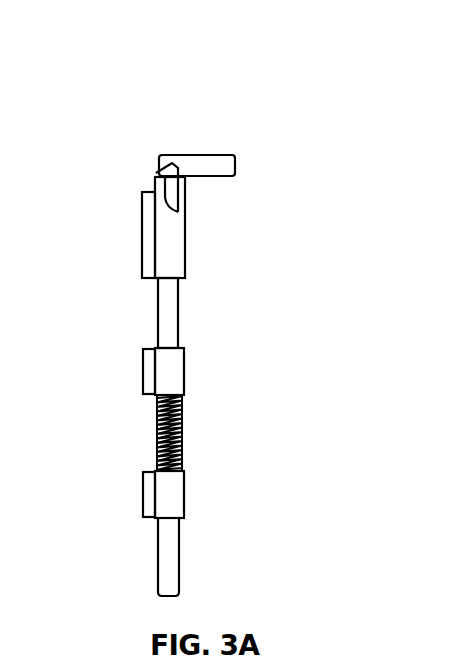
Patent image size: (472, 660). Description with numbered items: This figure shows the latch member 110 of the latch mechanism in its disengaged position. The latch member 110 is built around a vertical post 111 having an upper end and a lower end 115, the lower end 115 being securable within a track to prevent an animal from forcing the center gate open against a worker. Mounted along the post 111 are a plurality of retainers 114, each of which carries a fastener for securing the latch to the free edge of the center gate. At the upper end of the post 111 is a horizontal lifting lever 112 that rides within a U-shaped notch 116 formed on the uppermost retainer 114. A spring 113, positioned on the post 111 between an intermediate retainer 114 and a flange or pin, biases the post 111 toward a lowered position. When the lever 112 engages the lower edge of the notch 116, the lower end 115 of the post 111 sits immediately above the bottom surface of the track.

The latch member 110 is at (176, 130).
The post 111 is at (180, 318).
The horizontal lifting lever 112 is at (225, 165).
The spring 113 is at (183, 437).
The retainer 114 is at (185, 263).
The lower end 115 is at (179, 559).
The U-shaped notch 116 is at (185, 205).